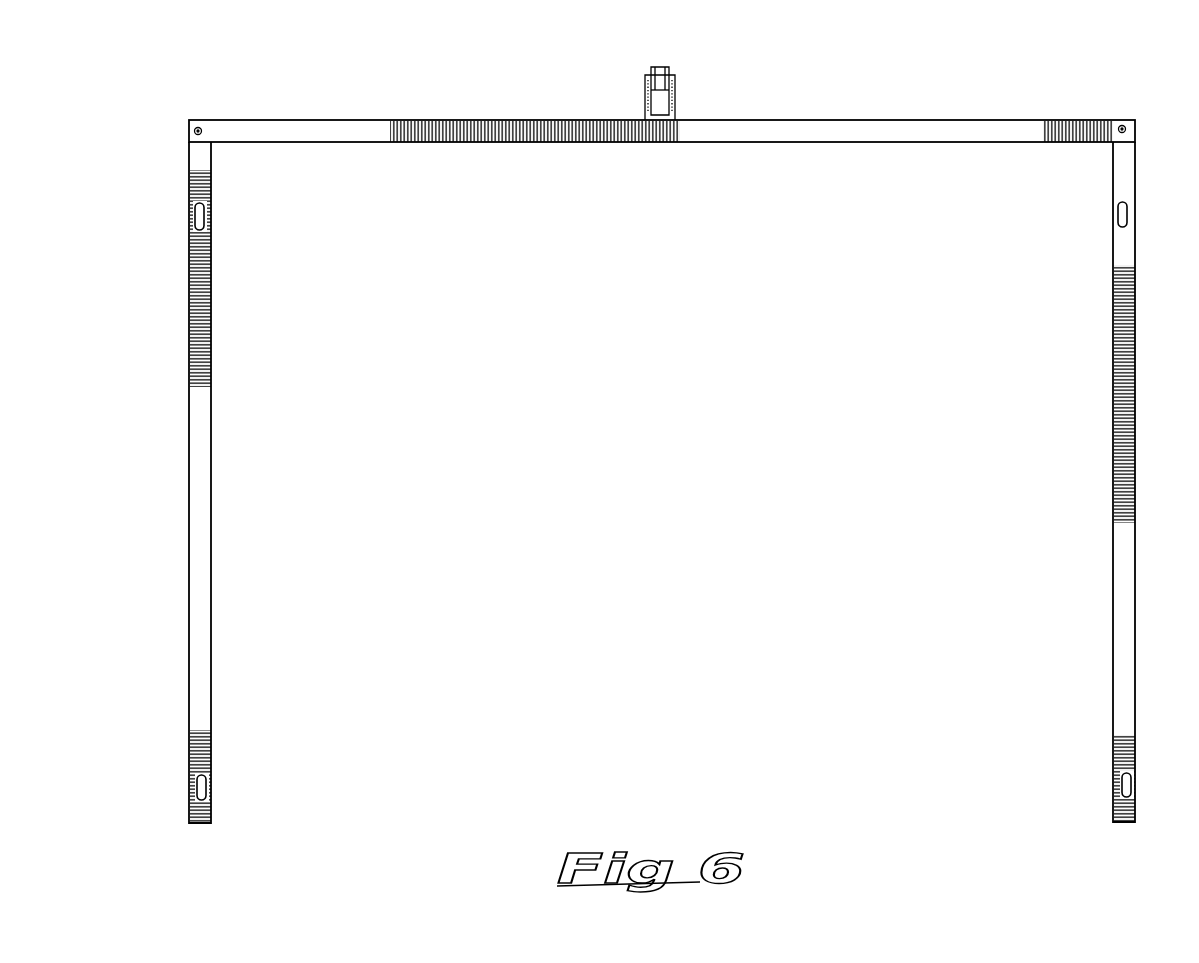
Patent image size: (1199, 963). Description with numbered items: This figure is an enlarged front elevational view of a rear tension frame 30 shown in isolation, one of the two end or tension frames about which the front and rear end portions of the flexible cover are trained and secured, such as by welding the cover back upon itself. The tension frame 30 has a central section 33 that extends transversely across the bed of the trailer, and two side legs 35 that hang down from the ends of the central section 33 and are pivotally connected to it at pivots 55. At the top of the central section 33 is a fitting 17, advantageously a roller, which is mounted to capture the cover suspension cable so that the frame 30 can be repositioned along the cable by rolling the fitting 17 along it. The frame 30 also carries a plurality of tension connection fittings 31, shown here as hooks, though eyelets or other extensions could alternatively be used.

The tension frame 30 is at (258, 97).
The fitting 17 is at (676, 65).
The central section 33 is at (862, 128).
The side leg 35 is at (200, 520).
The tension connection fitting 31 is at (214, 213).
The pivot 55 is at (193, 131).